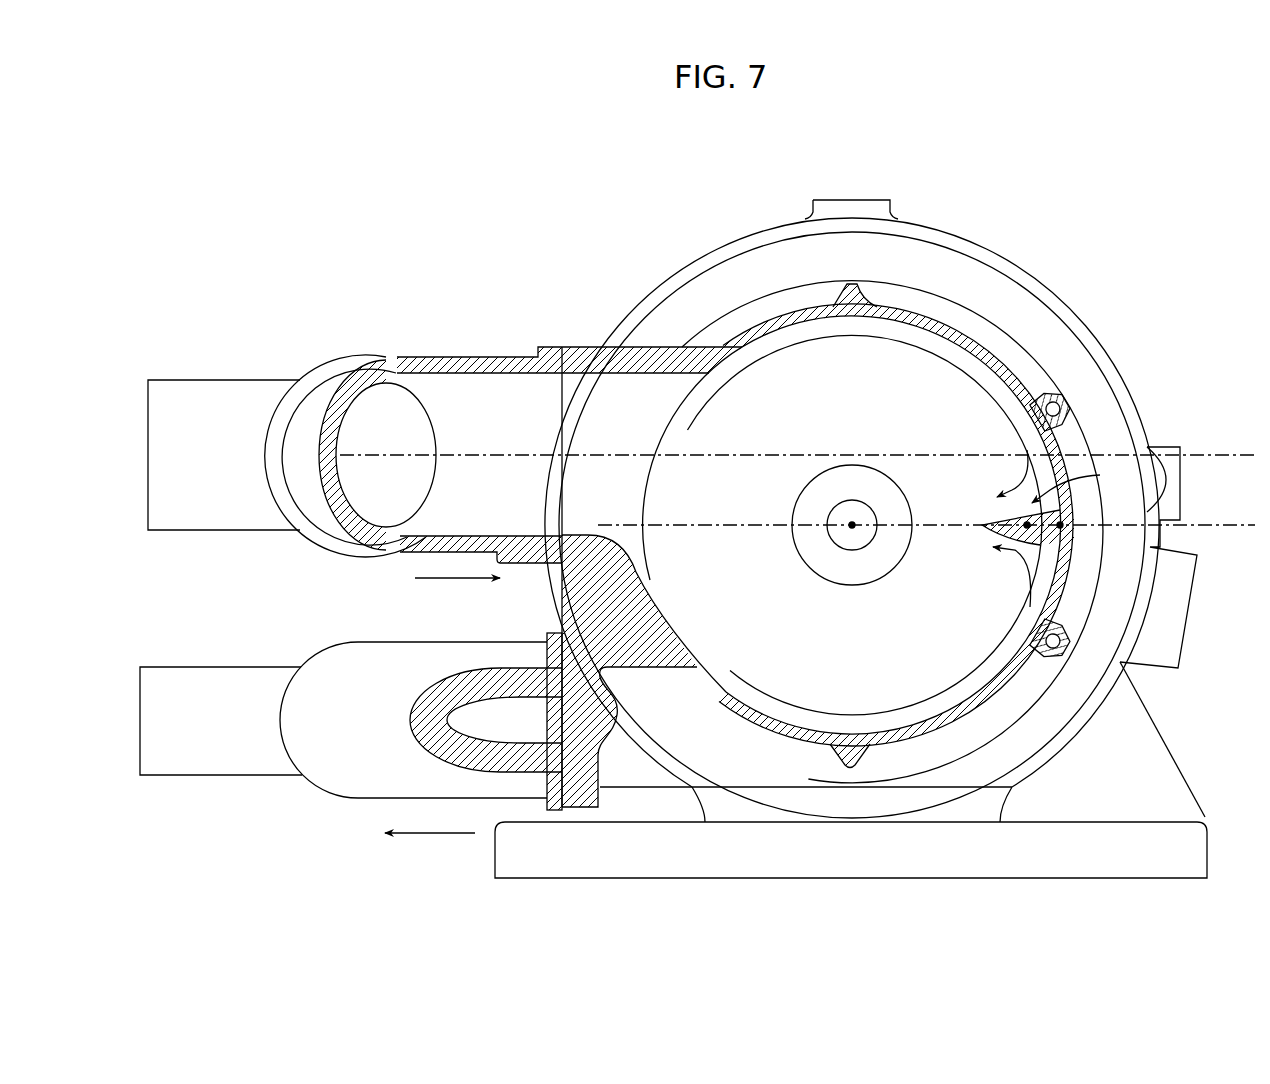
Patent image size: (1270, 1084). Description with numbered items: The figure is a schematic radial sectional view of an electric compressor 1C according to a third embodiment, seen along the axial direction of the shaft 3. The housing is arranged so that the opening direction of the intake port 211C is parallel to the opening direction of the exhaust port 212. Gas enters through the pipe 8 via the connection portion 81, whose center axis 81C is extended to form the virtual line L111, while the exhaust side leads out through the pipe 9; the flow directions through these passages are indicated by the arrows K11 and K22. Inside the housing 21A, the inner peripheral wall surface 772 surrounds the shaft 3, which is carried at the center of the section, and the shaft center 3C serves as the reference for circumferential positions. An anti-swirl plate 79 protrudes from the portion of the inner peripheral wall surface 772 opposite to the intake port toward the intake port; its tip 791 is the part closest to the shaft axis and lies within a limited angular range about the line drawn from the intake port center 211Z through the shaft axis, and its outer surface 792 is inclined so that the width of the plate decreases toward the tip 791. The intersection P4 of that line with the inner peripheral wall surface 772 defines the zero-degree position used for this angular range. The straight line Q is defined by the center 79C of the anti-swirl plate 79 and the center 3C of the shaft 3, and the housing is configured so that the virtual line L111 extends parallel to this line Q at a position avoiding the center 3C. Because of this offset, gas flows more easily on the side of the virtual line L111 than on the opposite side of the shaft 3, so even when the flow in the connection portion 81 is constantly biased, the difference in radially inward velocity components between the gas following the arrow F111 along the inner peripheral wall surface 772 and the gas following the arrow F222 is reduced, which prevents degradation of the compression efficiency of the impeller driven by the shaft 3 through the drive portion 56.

The electric compressor 1C is at (712, 178).
The inlet pipe 8 is at (223, 376).
The connection portion 81 is at (413, 358).
The center axis of the connection portion 81C is at (393, 453).
The inflow direction K11 is at (467, 410).
The outflow direction K22 is at (444, 508).
The intake port 211C is at (583, 387).
The center of the intake port 211Z is at (562, 455).
The exhaust port 212 is at (573, 720).
The casing 21A is at (921, 306).
The arrow F111 is at (890, 347).
The second flow path F222 is at (913, 698).
The virtual line L111 is at (752, 455).
The straight line Q is at (740, 527).
The shaft 56 is at (833, 580).
The shaft 3 is at (853, 524).
The center of the shaft 3C is at (1027, 450).
The inner peripheral wall surface 772 is at (1068, 408).
The tip of the anti-swirl plate 791 is at (985, 533).
The outer surface of the anti-swirl plate 792 is at (1042, 547).
The anti-swirl plate 79 is at (1100, 475).
The center of the anti-swirl plate 79C is at (1062, 510).
The intersection P4 is at (1063, 527).
The outlet pipe 9 is at (223, 779).